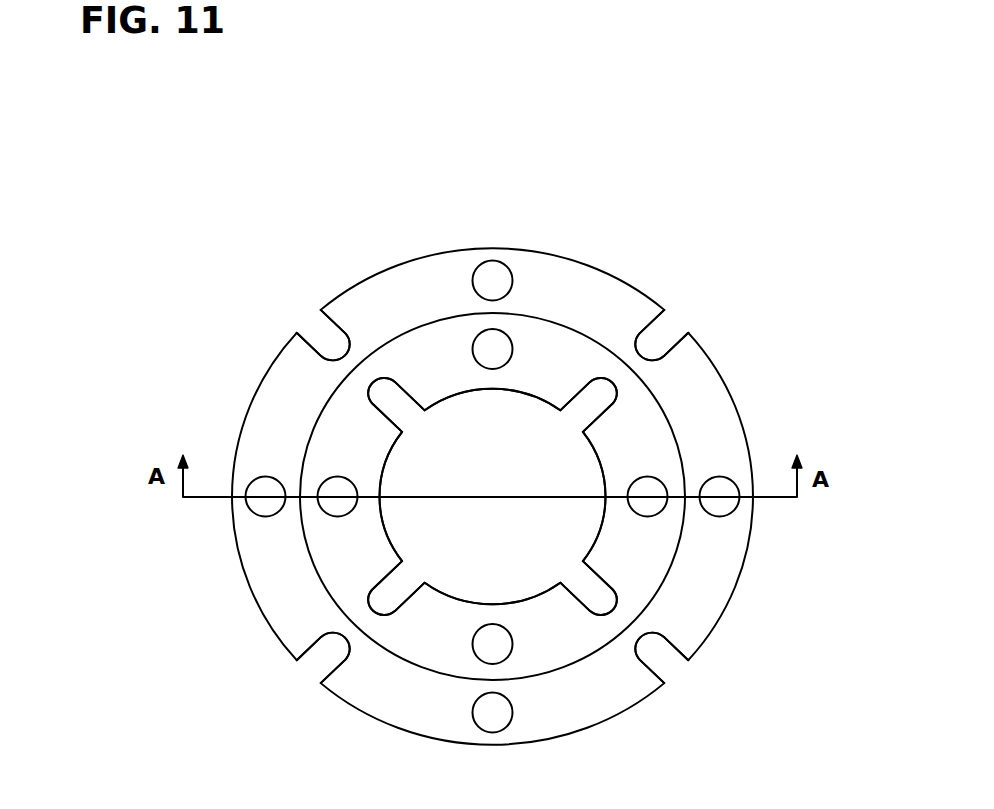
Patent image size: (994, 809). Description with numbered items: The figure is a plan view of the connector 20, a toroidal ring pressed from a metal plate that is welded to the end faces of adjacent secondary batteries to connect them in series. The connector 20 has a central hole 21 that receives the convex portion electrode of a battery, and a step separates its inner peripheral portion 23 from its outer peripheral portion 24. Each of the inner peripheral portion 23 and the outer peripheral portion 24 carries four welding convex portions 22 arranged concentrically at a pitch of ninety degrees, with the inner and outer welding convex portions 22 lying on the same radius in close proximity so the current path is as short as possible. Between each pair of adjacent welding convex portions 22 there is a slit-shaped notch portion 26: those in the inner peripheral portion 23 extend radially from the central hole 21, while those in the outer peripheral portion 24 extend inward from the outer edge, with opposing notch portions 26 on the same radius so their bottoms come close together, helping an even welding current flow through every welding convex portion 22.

The connector 20 is at (649, 274).
The central hole 21 is at (584, 459).
The welding convex portions 22 is at (262, 512).
The inner peripheral portion 23 is at (456, 384).
The outer peripheral portion 24 is at (705, 613).
The notch portion 26 is at (686, 314).